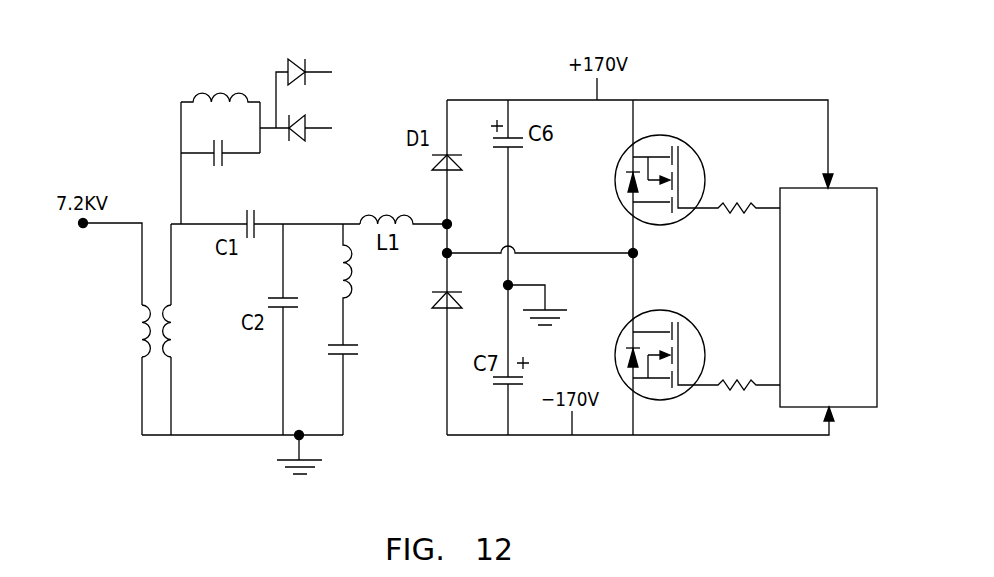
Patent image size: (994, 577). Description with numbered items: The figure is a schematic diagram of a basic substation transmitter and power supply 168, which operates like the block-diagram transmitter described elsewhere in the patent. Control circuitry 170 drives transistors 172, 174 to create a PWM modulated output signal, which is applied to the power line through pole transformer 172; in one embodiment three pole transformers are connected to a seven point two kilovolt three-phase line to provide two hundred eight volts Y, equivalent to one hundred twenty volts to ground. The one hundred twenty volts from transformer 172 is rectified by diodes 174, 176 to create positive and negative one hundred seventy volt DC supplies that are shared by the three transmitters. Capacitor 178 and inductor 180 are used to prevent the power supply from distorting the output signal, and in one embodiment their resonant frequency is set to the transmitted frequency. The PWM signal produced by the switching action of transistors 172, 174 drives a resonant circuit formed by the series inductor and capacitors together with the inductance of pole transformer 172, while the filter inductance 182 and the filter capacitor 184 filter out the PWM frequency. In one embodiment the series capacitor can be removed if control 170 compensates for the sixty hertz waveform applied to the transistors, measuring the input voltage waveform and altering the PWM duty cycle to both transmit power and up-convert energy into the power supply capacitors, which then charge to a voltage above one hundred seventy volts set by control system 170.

The substation transmitter and power supply 168 is at (801, 78).
The control circuitry 170 is at (780, 298).
The transistor / pole transformer 172 is at (145, 197).
The transistor / diode 174 is at (288, 60).
The diode 176 is at (303, 140).
The capacitor 178 is at (223, 158).
The inductor 180 is at (221, 93).
The inductance L3 182 is at (354, 268).
The capacitor C3 184 is at (350, 357).